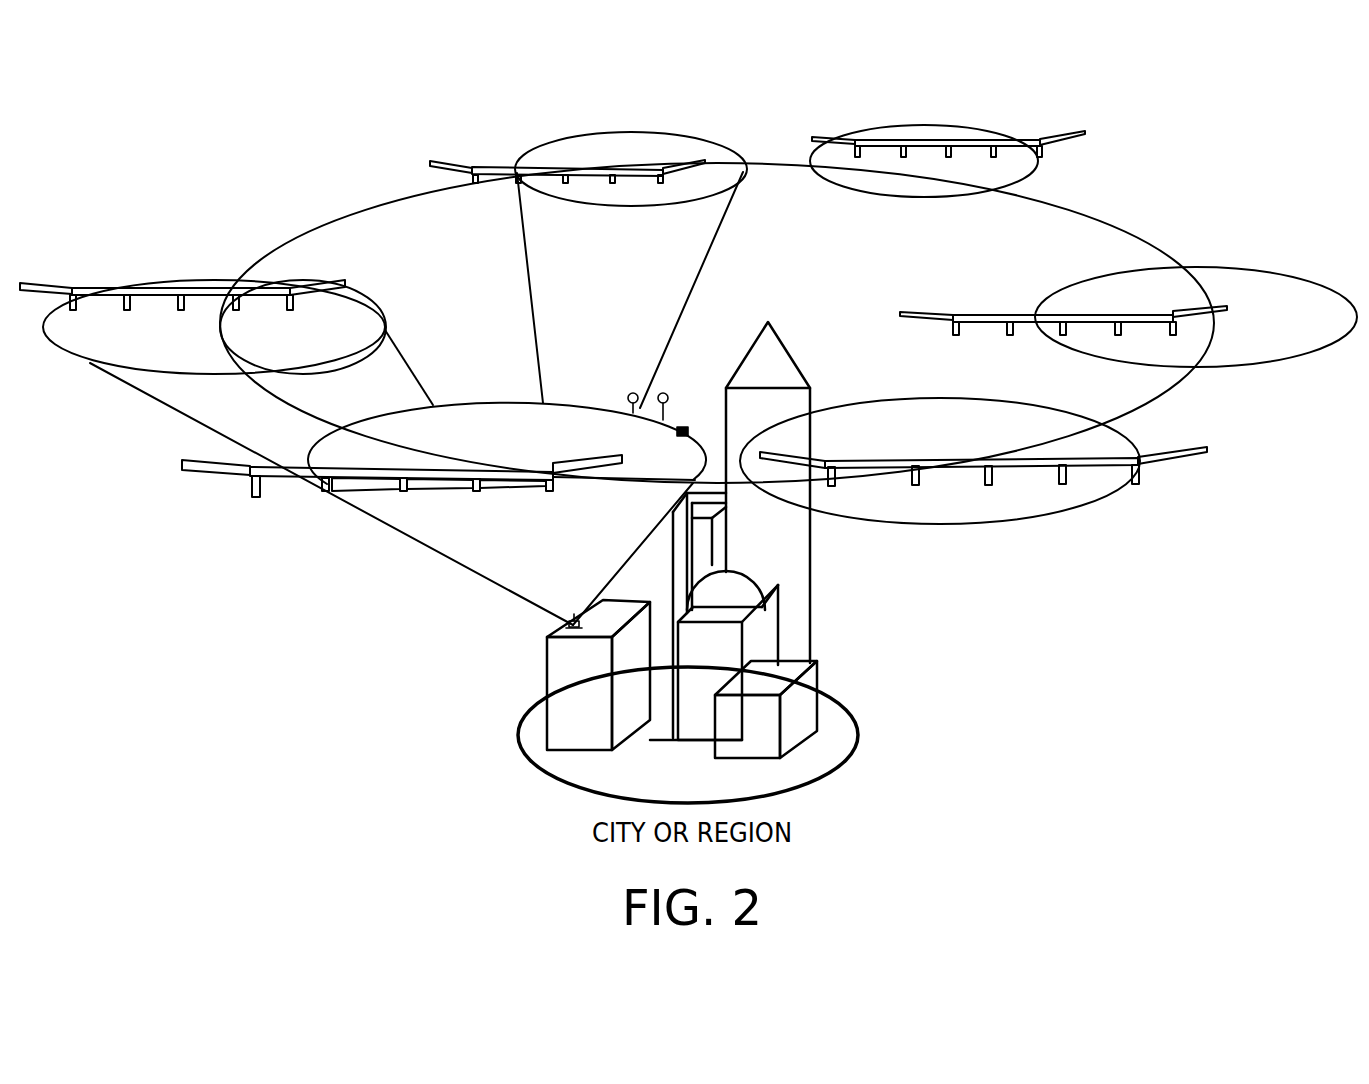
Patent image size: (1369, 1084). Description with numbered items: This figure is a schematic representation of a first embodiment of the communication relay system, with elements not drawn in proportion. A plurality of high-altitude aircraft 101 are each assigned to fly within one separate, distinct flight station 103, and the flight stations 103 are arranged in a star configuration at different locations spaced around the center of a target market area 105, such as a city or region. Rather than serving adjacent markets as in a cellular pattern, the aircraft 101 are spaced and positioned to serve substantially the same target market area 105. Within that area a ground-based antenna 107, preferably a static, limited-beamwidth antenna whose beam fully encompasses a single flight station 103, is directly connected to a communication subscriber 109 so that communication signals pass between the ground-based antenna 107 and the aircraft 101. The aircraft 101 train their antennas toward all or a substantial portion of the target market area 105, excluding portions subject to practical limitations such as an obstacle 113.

The aircraft 101 is at (97, 290).
The flight station 103 is at (1040, 170).
The target market area 105 is at (858, 738).
The ground-based antenna 107 is at (565, 628).
The communication subscriber 109 is at (547, 668).
The obstacle 113 is at (790, 348).